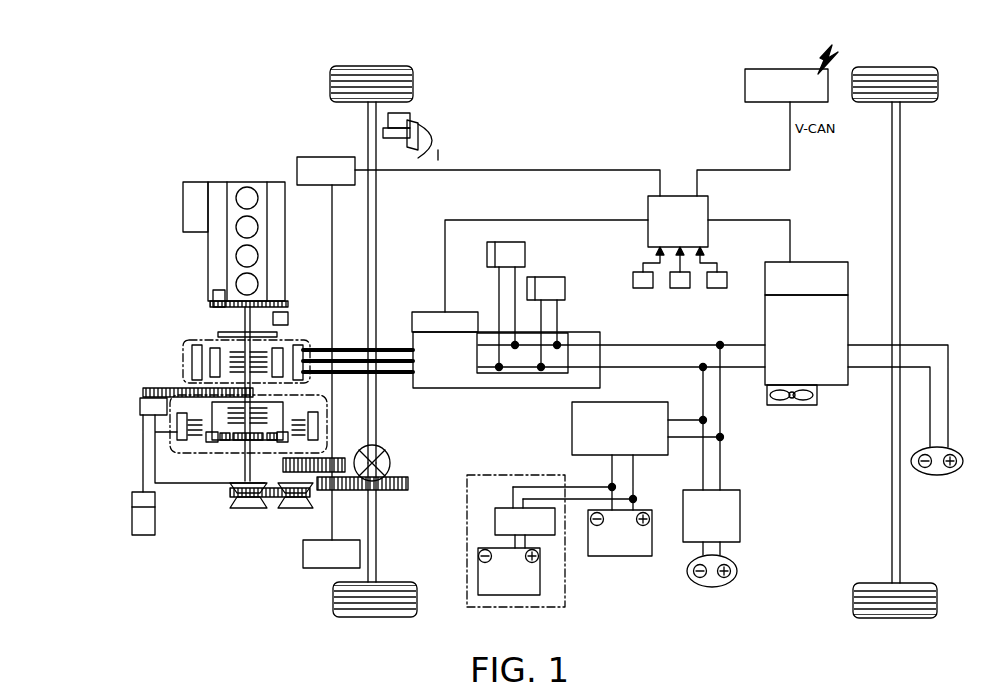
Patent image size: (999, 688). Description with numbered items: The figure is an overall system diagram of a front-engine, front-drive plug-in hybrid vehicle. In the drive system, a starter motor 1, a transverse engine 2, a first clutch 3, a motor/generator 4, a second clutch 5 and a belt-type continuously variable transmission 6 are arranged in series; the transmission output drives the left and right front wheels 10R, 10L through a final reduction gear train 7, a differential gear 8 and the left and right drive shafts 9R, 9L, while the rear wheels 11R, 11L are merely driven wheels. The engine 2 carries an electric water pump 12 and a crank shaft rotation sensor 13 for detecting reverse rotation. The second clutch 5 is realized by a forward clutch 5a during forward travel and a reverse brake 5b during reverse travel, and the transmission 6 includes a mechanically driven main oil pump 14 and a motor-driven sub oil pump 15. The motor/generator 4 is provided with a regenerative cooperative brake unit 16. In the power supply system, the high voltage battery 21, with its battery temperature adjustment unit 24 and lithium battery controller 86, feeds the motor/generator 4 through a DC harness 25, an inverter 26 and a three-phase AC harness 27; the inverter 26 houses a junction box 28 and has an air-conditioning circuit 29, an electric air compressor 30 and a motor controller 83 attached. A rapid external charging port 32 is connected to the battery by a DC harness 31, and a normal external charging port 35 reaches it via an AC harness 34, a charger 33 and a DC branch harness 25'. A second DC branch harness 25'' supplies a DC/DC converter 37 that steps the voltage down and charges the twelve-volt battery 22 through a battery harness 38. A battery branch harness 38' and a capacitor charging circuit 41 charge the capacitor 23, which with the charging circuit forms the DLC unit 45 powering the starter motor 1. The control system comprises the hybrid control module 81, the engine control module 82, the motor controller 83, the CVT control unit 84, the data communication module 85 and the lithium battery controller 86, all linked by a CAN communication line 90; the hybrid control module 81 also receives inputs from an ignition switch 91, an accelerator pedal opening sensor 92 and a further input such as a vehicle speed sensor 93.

The starter motor 1 is at (281, 318).
The transverse engine 2 is at (258, 187).
The first clutch 3 is at (236, 360).
The motor/generator 4 is at (197, 365).
The second clutch 5 is at (183, 447).
The forward clutch 5a is at (258, 415).
The reverse brake 5b is at (195, 437).
The belt-type continuously variable transmission 6 is at (250, 510).
The final reduction gear train 7 is at (338, 490).
The differential gear 8 is at (385, 450).
The right drive shaft 9R is at (377, 196).
The left drive shaft 9L is at (377, 548).
The right front wheel 10R is at (330, 84).
The left front wheel 10L is at (333, 600).
The right rear wheel 11R is at (938, 84).
The left rear wheel 11L is at (937, 598).
The electric water pump 12 is at (183, 191).
The crank shaft rotation sensor 13 is at (213, 298).
The main oil pump 14 is at (150, 405).
The sub oil pump 15 is at (143, 520).
The regenerative cooperative brake unit 16 is at (410, 120).
The high voltage battery 21 is at (842, 312).
The 12V battery 22 is at (598, 548).
The capacitor 23 is at (525, 585).
The battery temperature adjustment unit 24 is at (793, 400).
The DC harness 25 is at (713, 373).
The DC branch harness 25' is at (726, 417).
The DC branch harness 25'' is at (686, 428).
The inverter 26 is at (450, 375).
The AC harness 27 is at (357, 350).
The junction box 28 is at (556, 360).
The air-conditioning circuit 29 is at (548, 290).
The electric air compressor 30 is at (505, 255).
The DC harness 31 is at (936, 346).
The rapid external charging port 32 is at (938, 468).
The charger 33 is at (727, 536).
The AC harness 34 is at (690, 560).
The normal external charging port 35 is at (712, 578).
The DC/DC converter 37 is at (580, 448).
The battery harness 38 is at (599, 482).
The battery branch harness 38' is at (529, 466).
The capacitor charging circuit 41 is at (512, 520).
The DLC unit 45 is at (487, 606).
The hybrid control module 81 is at (680, 196).
The engine control module 82 is at (318, 157).
The motor controller 83 is at (425, 312).
The CVT control unit 84 is at (303, 555).
The data communication module 85 is at (745, 82).
The lithium battery controller 86 is at (838, 276).
The CAN communication line 90 is at (627, 220).
The ignition switch 91 is at (643, 288).
The accelerator pedal opening sensor 92 is at (680, 288).
The sensor 93 is at (717, 288).